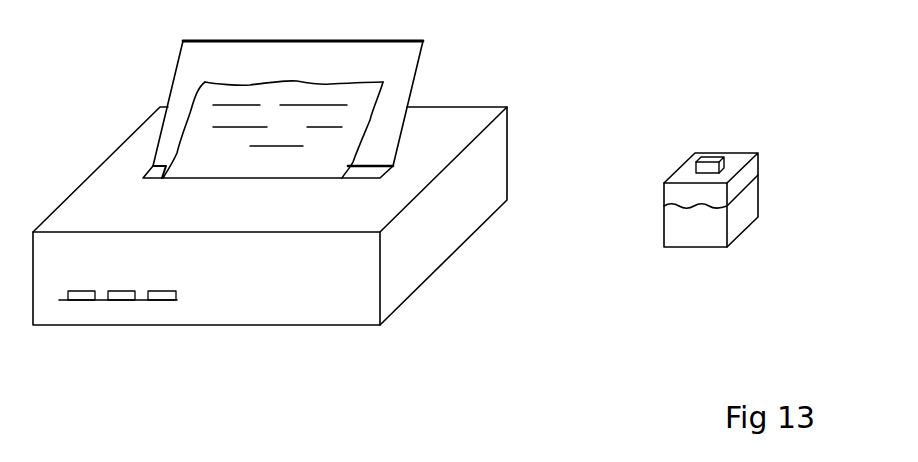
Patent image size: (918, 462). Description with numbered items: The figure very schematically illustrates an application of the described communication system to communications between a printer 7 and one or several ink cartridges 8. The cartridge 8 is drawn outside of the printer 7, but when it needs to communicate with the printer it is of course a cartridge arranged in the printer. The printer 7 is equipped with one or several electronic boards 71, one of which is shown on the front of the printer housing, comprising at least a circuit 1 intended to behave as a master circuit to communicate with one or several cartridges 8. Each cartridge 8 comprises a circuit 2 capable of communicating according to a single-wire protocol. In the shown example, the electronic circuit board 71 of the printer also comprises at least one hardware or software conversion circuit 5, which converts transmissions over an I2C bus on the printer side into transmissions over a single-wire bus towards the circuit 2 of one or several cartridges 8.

The printer 7 is at (307, 308).
The electronic board 71 is at (102, 302).
The circuit 1 is at (125, 291).
The conversion circuit 5 is at (162, 293).
The ink cartridge 8 is at (750, 207).
The circuit 2 is at (722, 168).